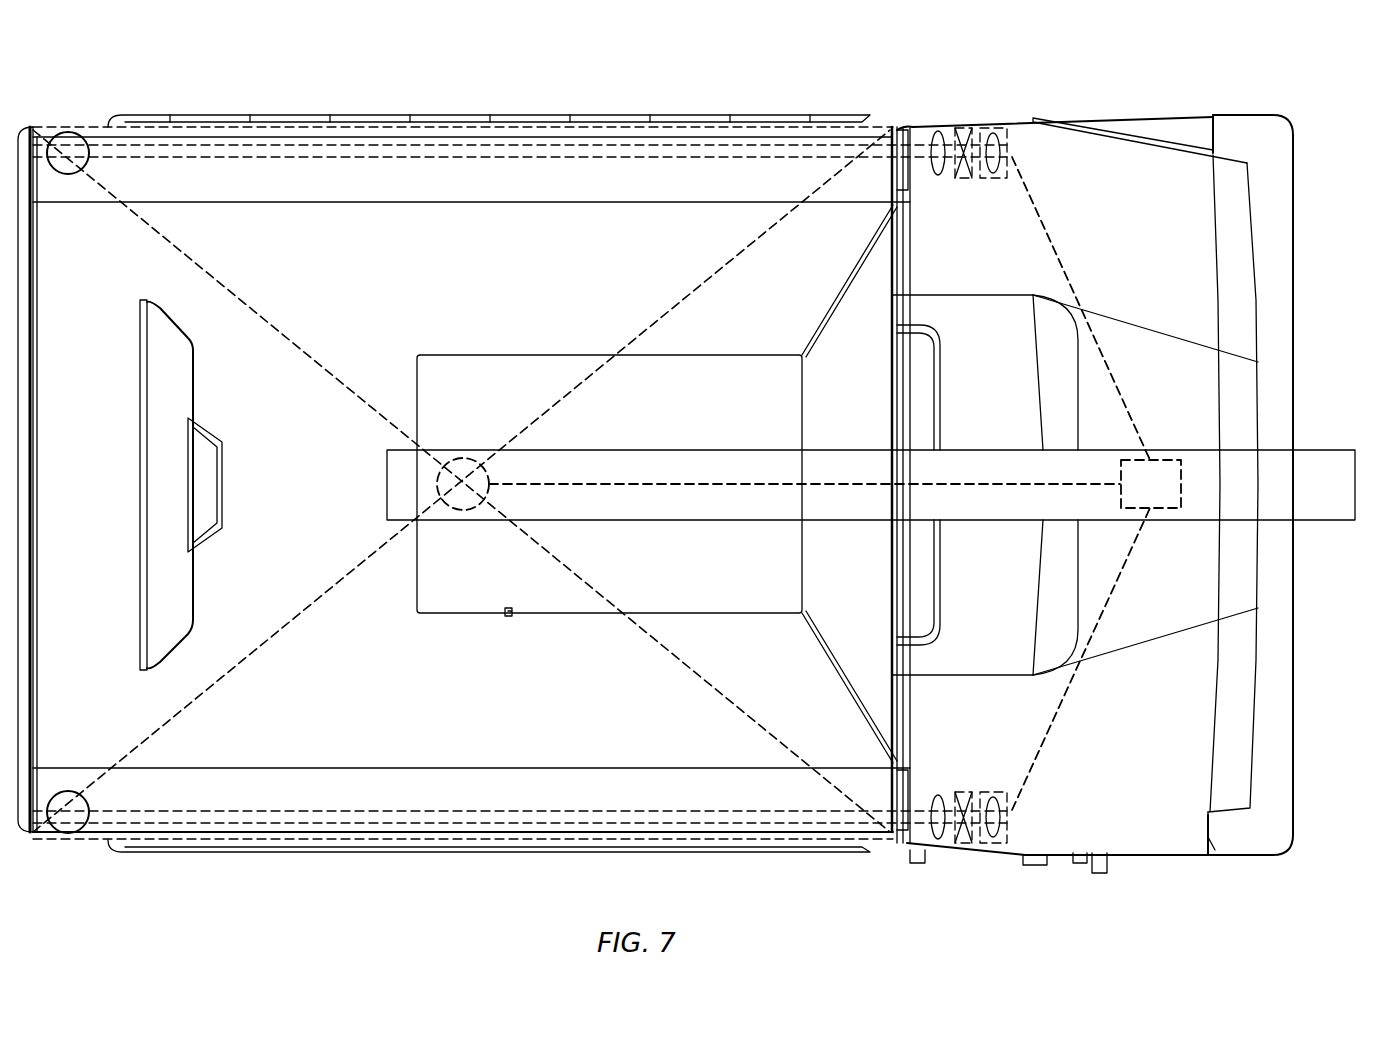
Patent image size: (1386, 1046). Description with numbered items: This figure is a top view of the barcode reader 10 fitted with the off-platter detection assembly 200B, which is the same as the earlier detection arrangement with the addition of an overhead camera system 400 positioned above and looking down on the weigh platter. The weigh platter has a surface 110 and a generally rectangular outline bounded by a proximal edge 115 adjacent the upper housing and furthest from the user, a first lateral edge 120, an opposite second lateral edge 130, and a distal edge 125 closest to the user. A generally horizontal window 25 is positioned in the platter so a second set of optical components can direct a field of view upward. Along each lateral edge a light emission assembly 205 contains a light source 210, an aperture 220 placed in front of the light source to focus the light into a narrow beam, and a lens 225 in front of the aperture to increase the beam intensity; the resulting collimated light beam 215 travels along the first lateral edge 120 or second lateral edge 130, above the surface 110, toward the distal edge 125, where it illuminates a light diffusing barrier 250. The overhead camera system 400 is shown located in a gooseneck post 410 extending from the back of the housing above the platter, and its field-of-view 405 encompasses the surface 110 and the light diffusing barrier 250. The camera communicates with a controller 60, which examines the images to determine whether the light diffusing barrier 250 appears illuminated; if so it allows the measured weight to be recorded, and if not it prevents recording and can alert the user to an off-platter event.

The barcode reader 10 is at (762, 90).
The horizontal window 25 is at (502, 385).
The controller 60 is at (1172, 460).
The surface 110 is at (320, 273).
The proximal edge 115 is at (895, 393).
The first lateral edge 120 is at (375, 832).
The distal edge 125 is at (38, 262).
The second lateral edge 130 is at (262, 137).
The off-platter detection assembly 200B is at (972, 762).
The light emission assembly 205 is at (1022, 150).
The light source 210 is at (1012, 135).
The collimated light beam 215 is at (470, 147).
The aperture 220 is at (963, 128).
The lens 225 is at (933, 128).
The light diffusing barrier 250 is at (68, 150).
The overhead camera system 400 is at (435, 485).
The field-of-view 405 is at (897, 548).
The gooseneck post 410 is at (1265, 477).